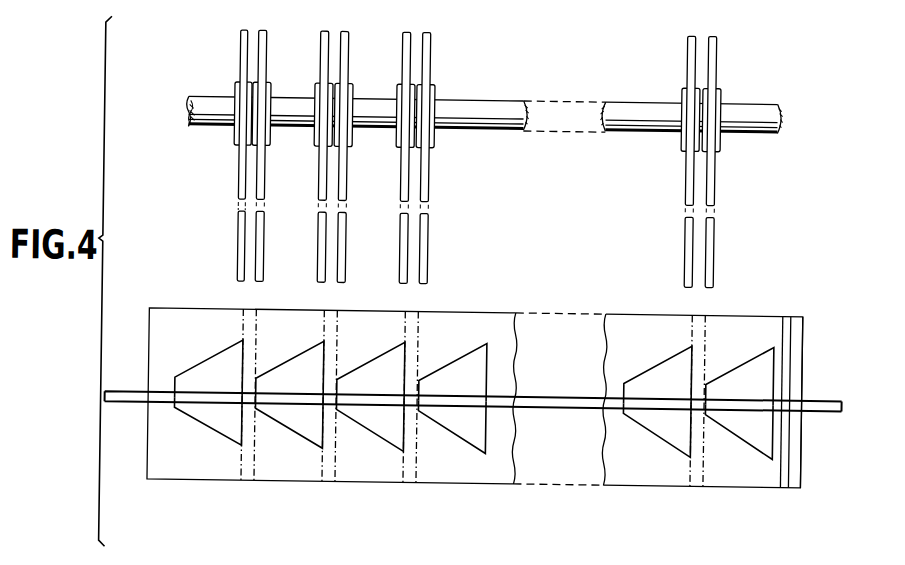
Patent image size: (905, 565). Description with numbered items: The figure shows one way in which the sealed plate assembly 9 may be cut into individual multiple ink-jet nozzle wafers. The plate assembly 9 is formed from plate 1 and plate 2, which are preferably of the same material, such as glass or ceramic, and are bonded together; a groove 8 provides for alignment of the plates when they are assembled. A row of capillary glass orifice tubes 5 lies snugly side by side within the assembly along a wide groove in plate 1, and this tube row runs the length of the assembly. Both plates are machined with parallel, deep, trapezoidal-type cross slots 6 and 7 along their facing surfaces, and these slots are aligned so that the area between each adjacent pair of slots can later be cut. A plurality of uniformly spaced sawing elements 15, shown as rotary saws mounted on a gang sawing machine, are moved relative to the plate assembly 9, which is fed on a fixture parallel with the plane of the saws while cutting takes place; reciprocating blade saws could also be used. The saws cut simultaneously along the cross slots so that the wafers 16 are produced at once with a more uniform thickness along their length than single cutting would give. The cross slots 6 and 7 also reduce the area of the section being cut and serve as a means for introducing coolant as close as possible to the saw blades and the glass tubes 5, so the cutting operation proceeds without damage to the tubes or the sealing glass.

The plate 1 is at (766, 476).
The plate 2 is at (767, 319).
The capillary glass orifice tubes 5 is at (122, 396).
The trapezoidal slot 6 is at (210, 430).
The trapezoidal slot 7 is at (205, 358).
The groove 8 is at (794, 362).
The plate assembly 9 is at (179, 489).
The sawing elements 15 is at (257, 180).
The wafers 16 is at (319, 466).